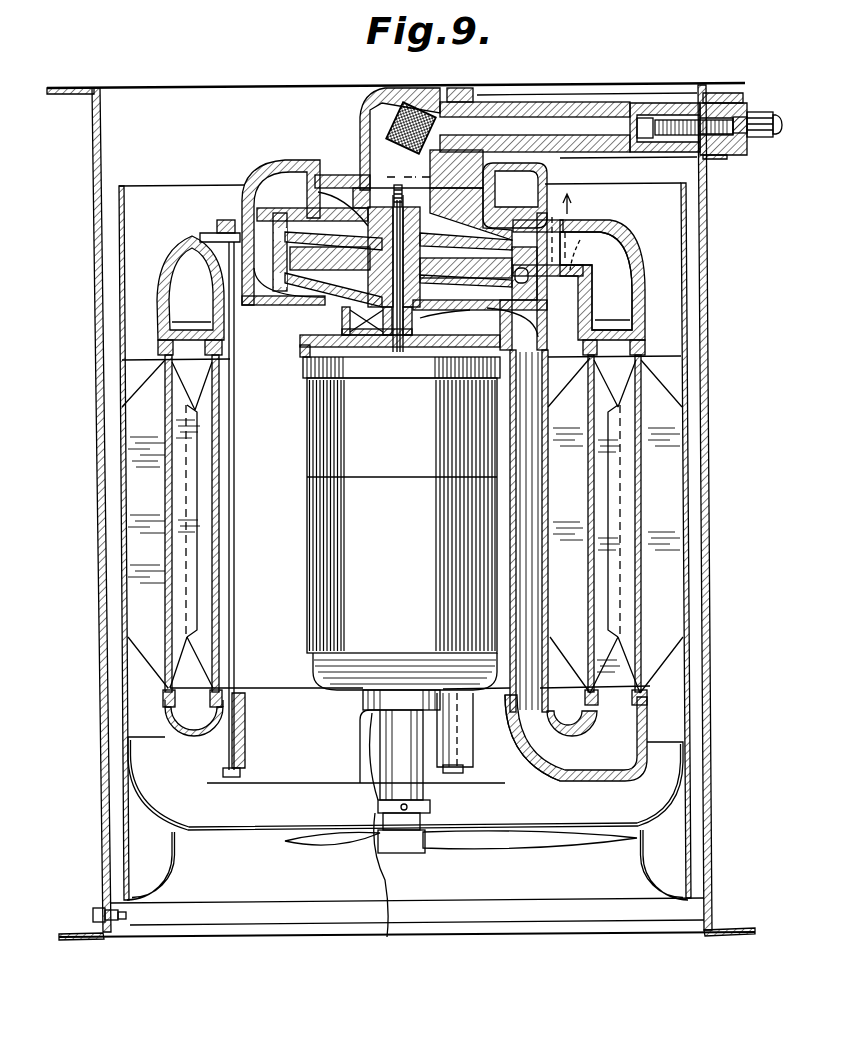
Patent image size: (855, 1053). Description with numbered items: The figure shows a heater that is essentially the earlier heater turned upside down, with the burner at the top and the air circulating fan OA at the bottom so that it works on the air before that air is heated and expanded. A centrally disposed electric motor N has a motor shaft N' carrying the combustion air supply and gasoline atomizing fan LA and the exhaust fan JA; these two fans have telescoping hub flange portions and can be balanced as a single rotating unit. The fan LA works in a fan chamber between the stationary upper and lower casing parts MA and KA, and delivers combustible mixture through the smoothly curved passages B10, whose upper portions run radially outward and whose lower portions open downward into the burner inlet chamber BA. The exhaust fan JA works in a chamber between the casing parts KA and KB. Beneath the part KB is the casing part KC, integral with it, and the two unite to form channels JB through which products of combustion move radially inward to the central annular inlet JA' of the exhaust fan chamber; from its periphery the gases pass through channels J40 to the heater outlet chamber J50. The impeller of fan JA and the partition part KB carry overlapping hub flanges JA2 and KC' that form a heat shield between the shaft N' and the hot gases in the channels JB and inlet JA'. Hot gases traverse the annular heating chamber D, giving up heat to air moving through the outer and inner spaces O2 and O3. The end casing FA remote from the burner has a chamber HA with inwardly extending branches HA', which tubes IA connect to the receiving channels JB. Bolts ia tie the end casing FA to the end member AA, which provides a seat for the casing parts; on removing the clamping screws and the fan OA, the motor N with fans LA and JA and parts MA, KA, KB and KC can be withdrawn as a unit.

The channels J40 is at (260, 233).
The heater outlet chamber J50 is at (277, 183).
The upper casing part MA is at (527, 172).
The combustion air supply and gasoline atomizing fan LA is at (369, 244).
The exhaust fan JA is at (432, 233).
The casing part KA is at (472, 267).
The hub flange JA2 is at (345, 316).
The motor shaft N' is at (390, 285).
The central annular inlet JA' is at (345, 342).
The casing part KC is at (400, 373).
The channels JB is at (460, 330).
The casing part KB is at (490, 330).
The hub flange KC' is at (307, 386).
The smoothly curved passages B10 is at (577, 240).
The burner inlet chamber BA is at (596, 281).
The end member AA is at (635, 322).
The inner space O3 is at (575, 530).
The heating space or chamber D is at (616, 521).
The outer space O2 is at (648, 530).
The bolts ia is at (237, 553).
The electric motor N is at (402, 604).
The tubes IA is at (533, 579).
The inwardly extending branches HA' is at (438, 739).
The chamber HA is at (427, 739).
The end casing FA is at (170, 768).
The circulating fan OA is at (517, 838).